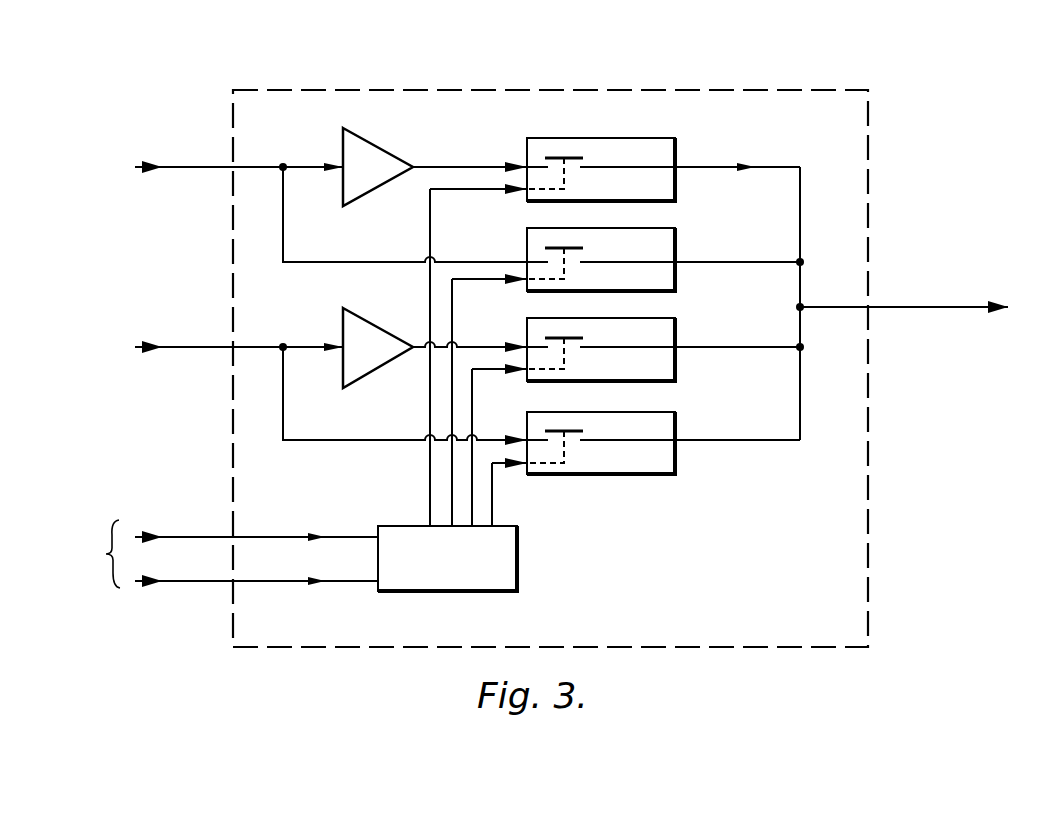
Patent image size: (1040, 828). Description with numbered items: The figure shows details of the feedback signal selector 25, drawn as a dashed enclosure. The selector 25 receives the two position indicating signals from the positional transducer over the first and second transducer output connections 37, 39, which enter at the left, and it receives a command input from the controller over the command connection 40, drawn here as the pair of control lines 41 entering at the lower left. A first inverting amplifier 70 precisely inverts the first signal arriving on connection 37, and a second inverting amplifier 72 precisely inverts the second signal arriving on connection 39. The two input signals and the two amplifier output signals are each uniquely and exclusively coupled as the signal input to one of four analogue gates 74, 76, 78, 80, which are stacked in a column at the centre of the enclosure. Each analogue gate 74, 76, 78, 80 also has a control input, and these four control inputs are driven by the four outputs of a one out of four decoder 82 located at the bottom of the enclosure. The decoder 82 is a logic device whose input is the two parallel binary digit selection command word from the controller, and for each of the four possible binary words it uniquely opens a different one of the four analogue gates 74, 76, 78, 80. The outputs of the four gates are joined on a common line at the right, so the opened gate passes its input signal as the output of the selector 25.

The selector 25 is at (287, 648).
The first transducer output connection 37 is at (183, 165).
The second transducer output connection 39 is at (187, 345).
The command connection 40 is at (930, 305).
The control input lines 41 is at (218, 554).
The first inverting amplifier 70 is at (387, 141).
The second inverting amplifier 72 is at (374, 321).
The analogue gate 74 is at (676, 144).
The analogue gate 76 is at (676, 236).
The analogue gate 78 is at (676, 326).
The analogue gate 80 is at (676, 417).
The 1 out of 4 decoder 82 is at (520, 543).